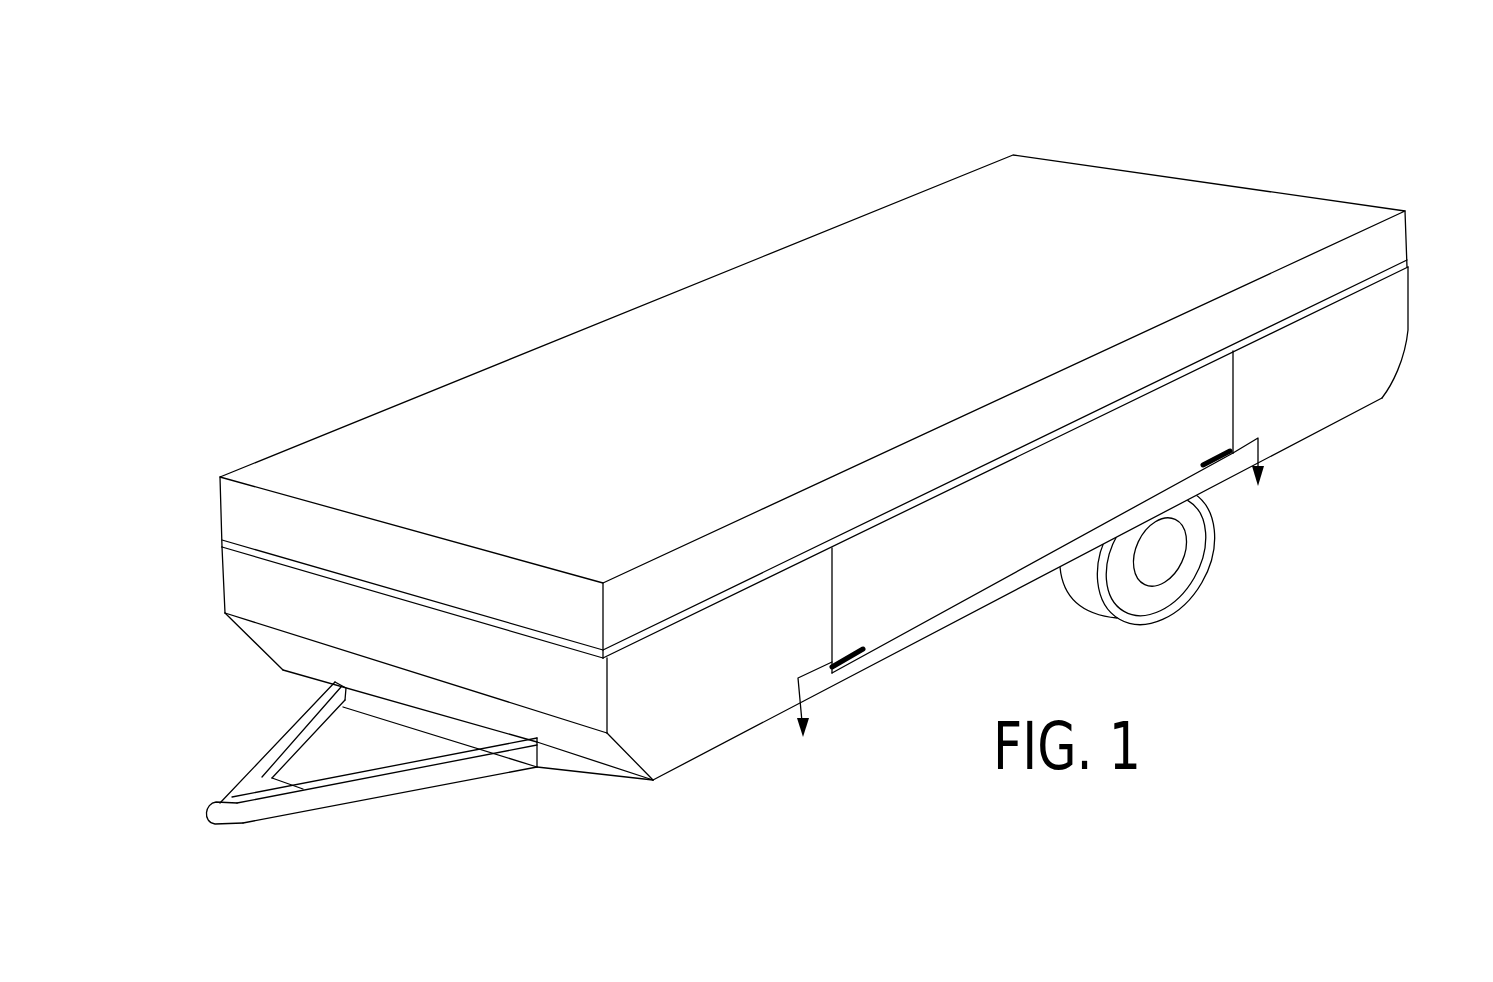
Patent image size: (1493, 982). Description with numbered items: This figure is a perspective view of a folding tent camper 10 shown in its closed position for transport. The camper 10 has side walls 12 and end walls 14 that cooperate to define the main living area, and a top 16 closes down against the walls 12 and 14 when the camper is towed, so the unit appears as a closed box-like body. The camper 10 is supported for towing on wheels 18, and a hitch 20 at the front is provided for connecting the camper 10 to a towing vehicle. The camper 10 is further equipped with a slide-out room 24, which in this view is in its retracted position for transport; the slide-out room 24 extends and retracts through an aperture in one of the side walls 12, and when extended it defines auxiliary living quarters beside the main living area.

The folding tent camper 10 is at (1125, 130).
The side walls 12 is at (217, 550).
The end walls 14 is at (243, 587).
The top 16 is at (1356, 253).
The wheels 18 is at (1185, 578).
The hitch 20 is at (400, 783).
The slide-out room 24 is at (1208, 413).